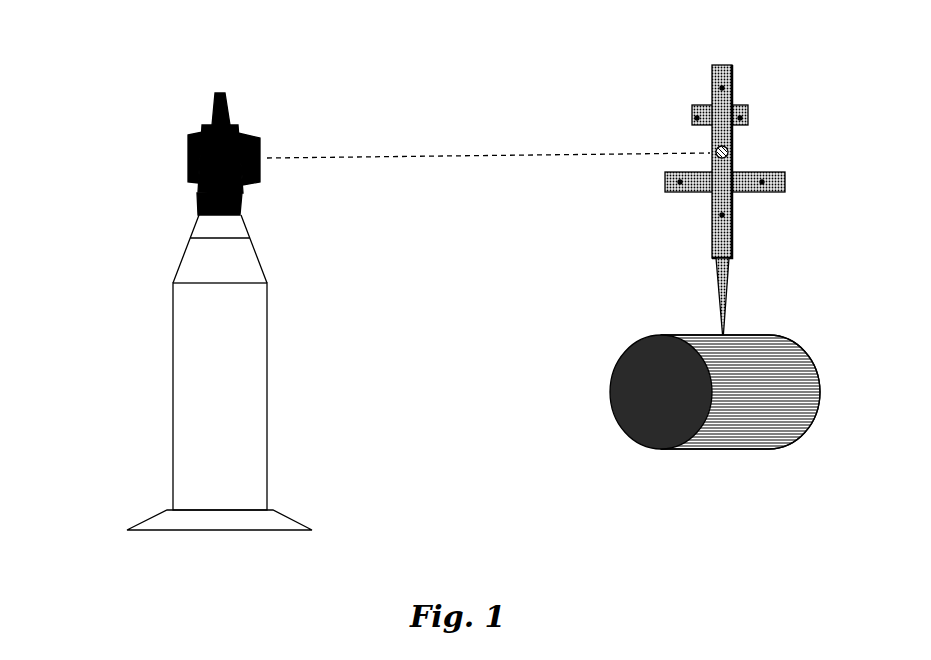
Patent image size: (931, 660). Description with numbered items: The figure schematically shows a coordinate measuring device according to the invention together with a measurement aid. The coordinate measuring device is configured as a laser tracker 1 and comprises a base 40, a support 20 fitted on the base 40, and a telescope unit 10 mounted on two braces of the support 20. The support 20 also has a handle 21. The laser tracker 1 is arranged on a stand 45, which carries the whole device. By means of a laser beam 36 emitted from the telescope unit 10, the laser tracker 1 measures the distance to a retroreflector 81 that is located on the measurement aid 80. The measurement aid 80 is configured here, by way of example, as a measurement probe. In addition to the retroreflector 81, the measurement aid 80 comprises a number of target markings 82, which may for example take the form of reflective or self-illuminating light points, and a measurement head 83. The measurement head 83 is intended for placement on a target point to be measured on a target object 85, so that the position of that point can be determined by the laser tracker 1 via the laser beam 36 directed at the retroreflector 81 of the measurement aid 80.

The laser tracker 1 is at (182, 82).
The telescope unit 10 is at (197, 143).
The support 20 is at (227, 138).
The handle 21 is at (220, 100).
The laser beam 36 is at (492, 155).
The base 40 is at (205, 202).
The stand 45 is at (160, 263).
The measurement aid 80 is at (698, 62).
The retroreflector 81 is at (727, 152).
The target markings 82 is at (722, 88).
The measurement head 83 is at (723, 342).
The target object 85 is at (608, 318).